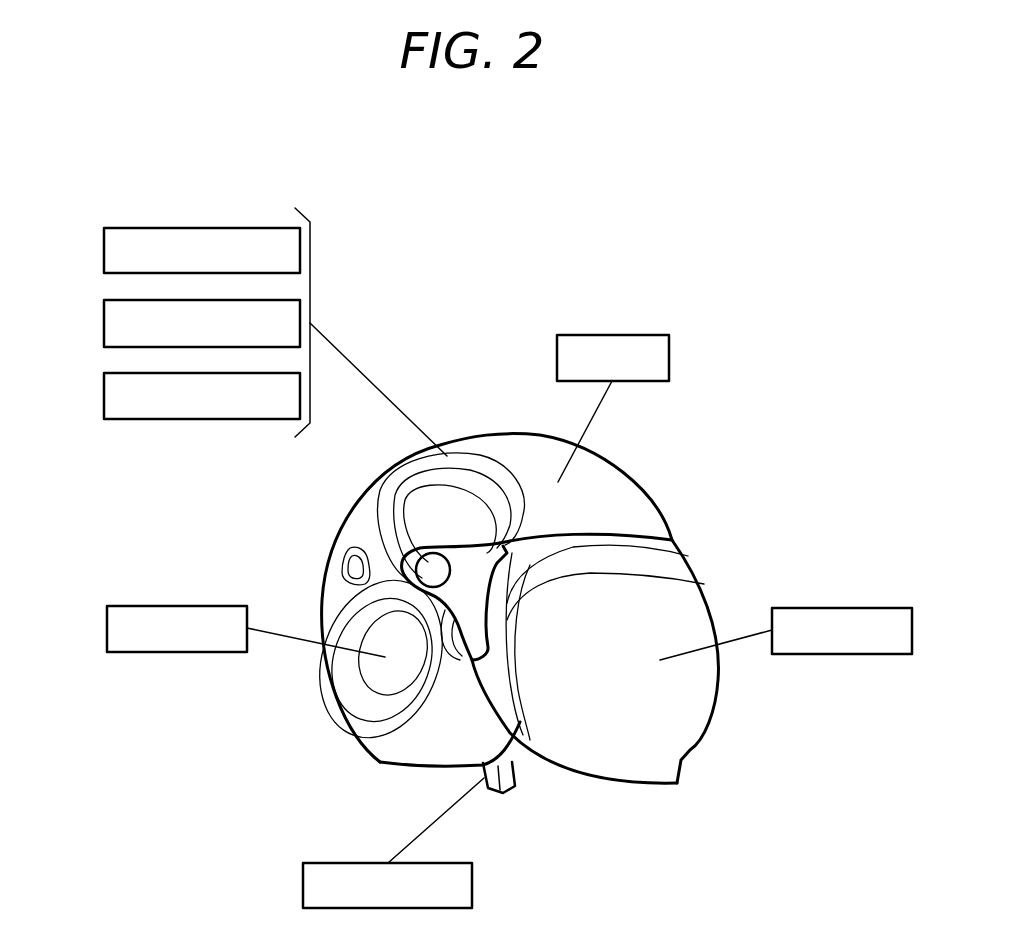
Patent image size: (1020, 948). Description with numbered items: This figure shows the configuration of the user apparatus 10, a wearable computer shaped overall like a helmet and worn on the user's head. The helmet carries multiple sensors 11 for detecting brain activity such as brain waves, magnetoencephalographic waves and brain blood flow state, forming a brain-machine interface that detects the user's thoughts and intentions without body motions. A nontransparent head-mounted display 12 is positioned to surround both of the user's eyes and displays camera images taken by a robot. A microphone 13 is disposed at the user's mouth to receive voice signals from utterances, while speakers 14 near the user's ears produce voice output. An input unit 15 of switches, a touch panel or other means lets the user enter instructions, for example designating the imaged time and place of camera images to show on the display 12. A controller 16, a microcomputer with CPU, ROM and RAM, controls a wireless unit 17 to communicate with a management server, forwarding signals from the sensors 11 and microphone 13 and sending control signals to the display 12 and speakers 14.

The user apparatus 10 is at (780, 342).
The sensors 11 is at (655, 335).
The display 12 is at (880, 608).
The microphone 13 is at (472, 886).
The speakers 14 is at (225, 606).
The input unit 15 is at (104, 249).
The controller 16 is at (104, 322).
The wireless unit 17 is at (104, 396).